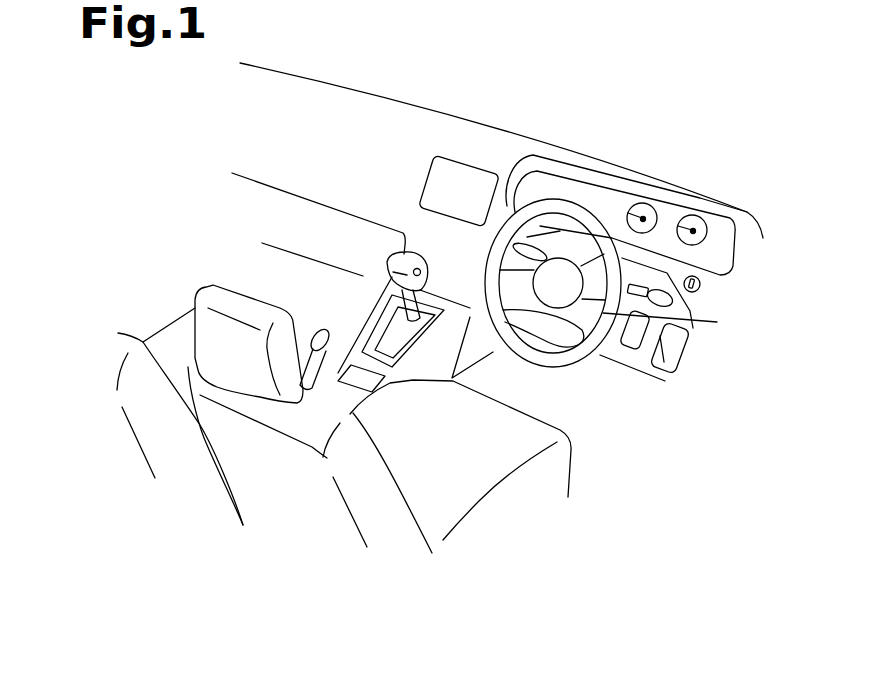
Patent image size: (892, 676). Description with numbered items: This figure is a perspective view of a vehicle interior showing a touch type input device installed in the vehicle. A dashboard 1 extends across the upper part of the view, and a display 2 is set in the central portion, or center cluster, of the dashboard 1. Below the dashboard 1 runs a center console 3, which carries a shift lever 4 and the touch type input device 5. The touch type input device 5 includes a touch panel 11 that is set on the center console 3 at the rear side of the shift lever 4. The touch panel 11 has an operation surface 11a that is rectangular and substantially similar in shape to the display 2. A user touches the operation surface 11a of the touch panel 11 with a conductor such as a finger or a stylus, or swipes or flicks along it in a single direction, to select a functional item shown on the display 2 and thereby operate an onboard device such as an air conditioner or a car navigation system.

The dashboard 1 is at (410, 110).
The display 2 is at (465, 175).
The center console 3 is at (367, 313).
The shift lever 4 is at (436, 281).
The touch type input device 5 is at (359, 426).
The operation surface 11a is at (372, 378).
The touch panel 11 is at (377, 365).